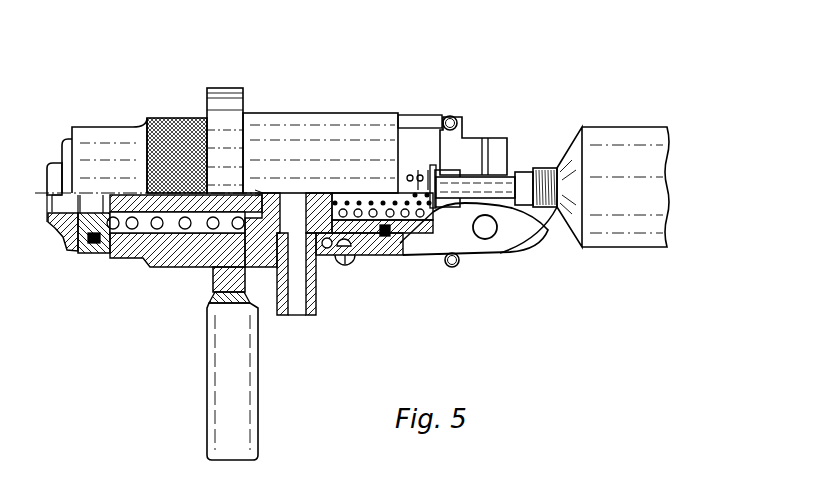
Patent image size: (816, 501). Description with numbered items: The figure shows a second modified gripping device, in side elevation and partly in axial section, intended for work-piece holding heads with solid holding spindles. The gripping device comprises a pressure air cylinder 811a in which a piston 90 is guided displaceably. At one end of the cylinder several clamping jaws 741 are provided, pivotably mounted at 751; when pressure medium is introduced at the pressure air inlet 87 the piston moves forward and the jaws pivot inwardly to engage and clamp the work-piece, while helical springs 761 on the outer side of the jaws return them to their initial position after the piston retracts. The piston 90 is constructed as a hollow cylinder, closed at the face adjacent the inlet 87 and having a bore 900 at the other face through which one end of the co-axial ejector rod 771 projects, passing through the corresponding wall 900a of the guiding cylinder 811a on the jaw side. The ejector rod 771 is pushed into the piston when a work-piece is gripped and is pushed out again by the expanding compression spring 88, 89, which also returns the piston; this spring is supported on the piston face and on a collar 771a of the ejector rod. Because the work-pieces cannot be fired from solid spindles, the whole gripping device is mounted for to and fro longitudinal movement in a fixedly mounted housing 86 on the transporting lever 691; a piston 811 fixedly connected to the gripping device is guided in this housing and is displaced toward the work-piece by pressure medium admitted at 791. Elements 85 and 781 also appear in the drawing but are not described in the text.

The cylinder housing 85 is at (632, 143).
The housing 86 is at (260, 283).
The pressure air inlet 87 is at (299, 308).
The compression spring 88 is at (368, 217).
The compression spring 89 is at (418, 165).
The piston 90 is at (328, 190).
The transporting lever 691 is at (240, 436).
The clamping jaw 741 is at (481, 243).
The pivot mounting of clamping jaws 751 is at (527, 250).
The helical spring 761 is at (450, 268).
The ejector rod 771 is at (500, 183).
The collar 771a is at (412, 205).
The ball channel 781 is at (133, 232).
The pressure medium admission 791 is at (65, 225).
The piston 811 is at (90, 250).
The pressure air cylinder 811a is at (470, 152).
The bore 900 is at (433, 130).
The wall of the piston guiding cylinder 900a is at (486, 150).